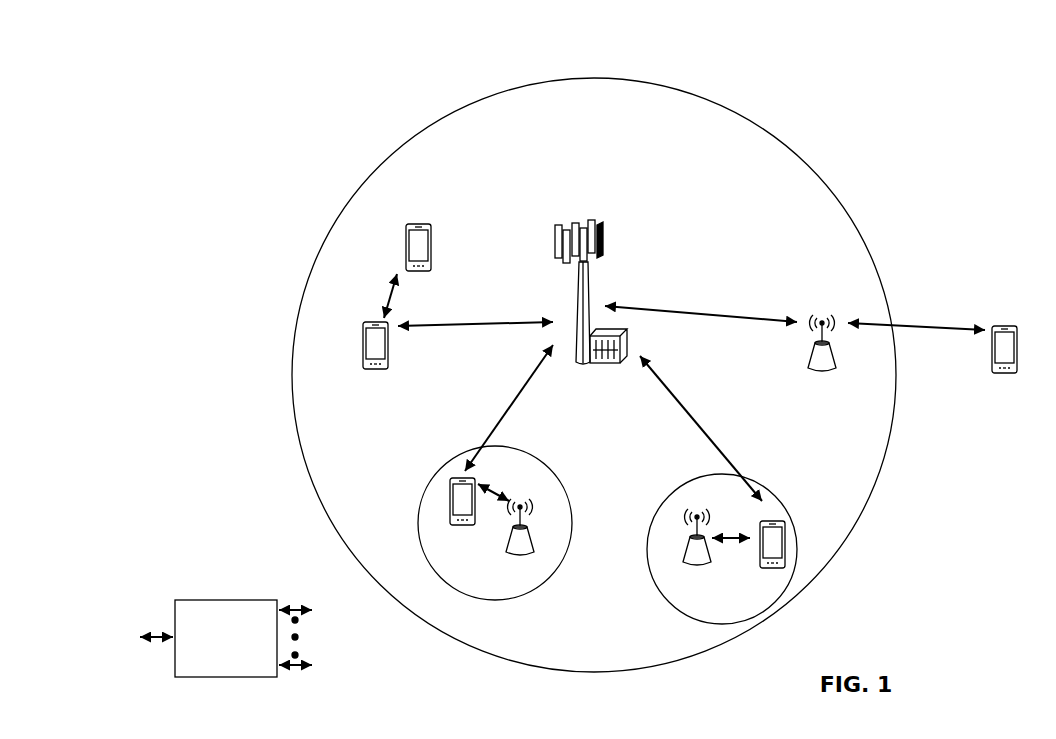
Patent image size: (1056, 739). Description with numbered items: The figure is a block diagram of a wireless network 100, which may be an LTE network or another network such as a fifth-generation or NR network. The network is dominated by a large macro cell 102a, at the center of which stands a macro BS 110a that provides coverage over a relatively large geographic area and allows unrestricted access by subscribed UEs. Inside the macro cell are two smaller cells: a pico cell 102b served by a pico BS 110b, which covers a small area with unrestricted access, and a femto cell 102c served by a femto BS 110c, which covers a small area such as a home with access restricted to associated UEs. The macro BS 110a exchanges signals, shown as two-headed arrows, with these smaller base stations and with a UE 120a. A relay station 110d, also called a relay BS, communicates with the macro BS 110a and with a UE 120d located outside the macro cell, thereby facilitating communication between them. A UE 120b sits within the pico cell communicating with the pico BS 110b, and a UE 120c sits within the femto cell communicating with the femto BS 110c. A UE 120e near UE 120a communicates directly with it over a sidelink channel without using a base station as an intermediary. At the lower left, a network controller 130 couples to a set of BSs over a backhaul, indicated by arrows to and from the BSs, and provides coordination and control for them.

The wireless network 100 is at (213, 66).
The macro cell 102a is at (797, 153).
The pico cell 102b is at (566, 486).
The femto cell 102c is at (679, 489).
The macro BS 110a is at (587, 214).
The pico BS 110b is at (534, 550).
The femto BS 110c is at (686, 558).
The relay station 110d is at (823, 316).
The UE 120a is at (363, 346).
The UE 120b is at (452, 526).
The UE 120c is at (762, 569).
The UE 120d is at (1011, 326).
The UE 120e is at (406, 238).
The network controller 130 is at (226, 600).